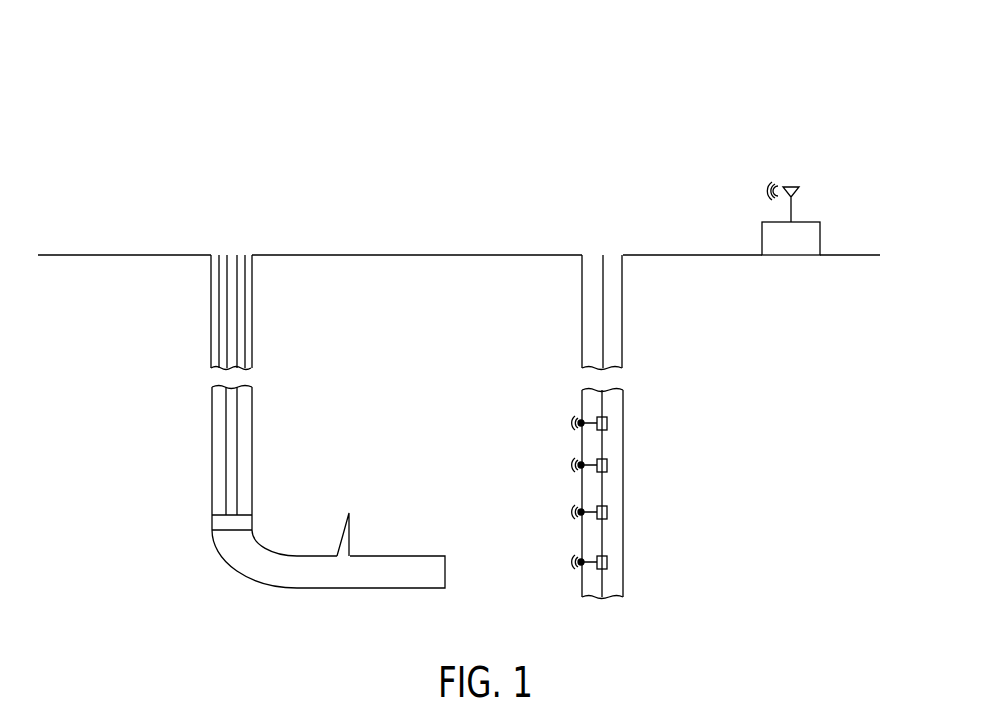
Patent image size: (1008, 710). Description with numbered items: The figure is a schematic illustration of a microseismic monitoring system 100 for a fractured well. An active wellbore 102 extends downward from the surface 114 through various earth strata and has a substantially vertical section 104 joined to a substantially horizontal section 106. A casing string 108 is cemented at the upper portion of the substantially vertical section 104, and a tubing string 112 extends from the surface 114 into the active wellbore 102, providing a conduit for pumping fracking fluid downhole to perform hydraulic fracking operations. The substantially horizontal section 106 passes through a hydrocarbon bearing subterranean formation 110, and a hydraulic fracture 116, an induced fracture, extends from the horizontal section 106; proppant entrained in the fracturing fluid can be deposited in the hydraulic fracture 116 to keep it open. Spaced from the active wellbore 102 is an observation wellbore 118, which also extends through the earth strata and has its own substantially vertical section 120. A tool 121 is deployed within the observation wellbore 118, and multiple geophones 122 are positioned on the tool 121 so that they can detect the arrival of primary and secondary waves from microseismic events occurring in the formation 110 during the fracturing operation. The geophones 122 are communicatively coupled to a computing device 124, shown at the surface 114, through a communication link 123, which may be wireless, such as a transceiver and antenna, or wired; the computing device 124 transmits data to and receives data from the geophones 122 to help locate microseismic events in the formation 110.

The microseismic monitoring system 100 is at (662, 82).
The active wellbore 102 is at (232, 312).
The substantially vertical section 104 is at (212, 443).
The substantially horizontal section 106 is at (425, 556).
The casing string 108 is at (252, 278).
The hydrocarbon bearing subterranean formation 110 is at (300, 487).
The tubing string 112 is at (233, 332).
The surface 114 is at (485, 255).
The hydraulic fracture 116 is at (348, 514).
The observation wellbore 118 is at (633, 312).
The substantially vertical section 120 is at (632, 492).
The tool 121 is at (603, 335).
The geophones 122 is at (607, 425).
The communication link 123 is at (579, 418).
The computing device 124 is at (806, 250).